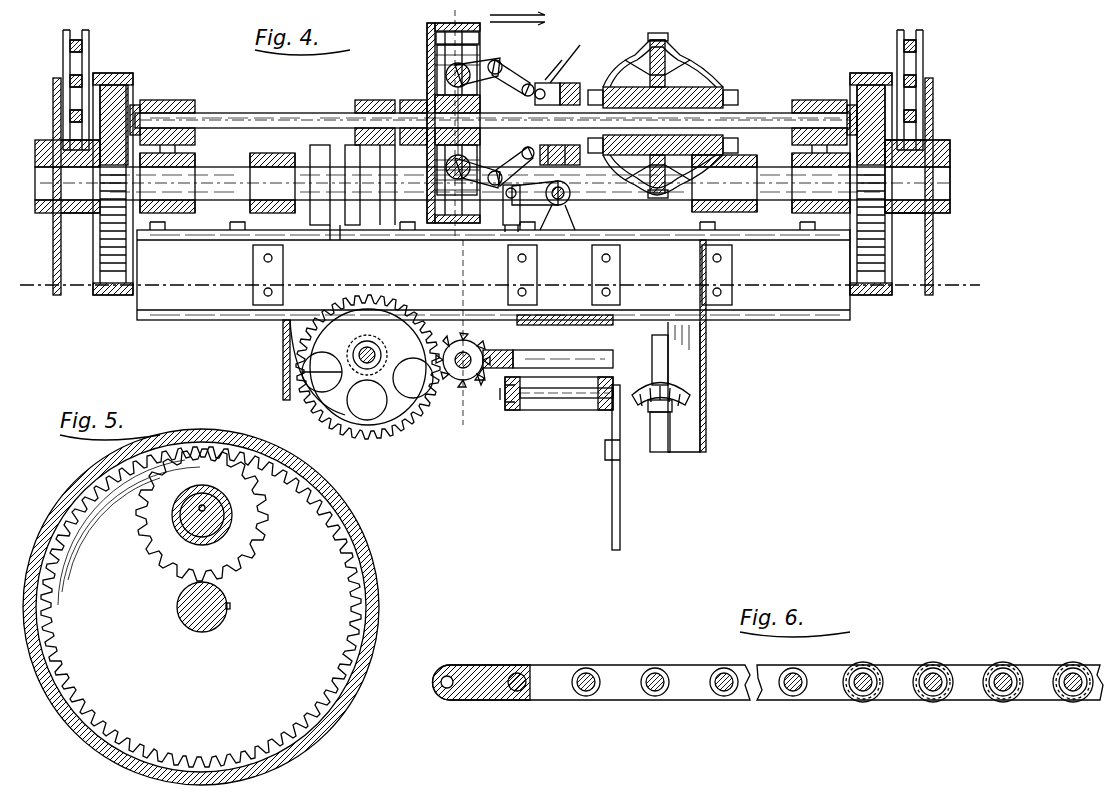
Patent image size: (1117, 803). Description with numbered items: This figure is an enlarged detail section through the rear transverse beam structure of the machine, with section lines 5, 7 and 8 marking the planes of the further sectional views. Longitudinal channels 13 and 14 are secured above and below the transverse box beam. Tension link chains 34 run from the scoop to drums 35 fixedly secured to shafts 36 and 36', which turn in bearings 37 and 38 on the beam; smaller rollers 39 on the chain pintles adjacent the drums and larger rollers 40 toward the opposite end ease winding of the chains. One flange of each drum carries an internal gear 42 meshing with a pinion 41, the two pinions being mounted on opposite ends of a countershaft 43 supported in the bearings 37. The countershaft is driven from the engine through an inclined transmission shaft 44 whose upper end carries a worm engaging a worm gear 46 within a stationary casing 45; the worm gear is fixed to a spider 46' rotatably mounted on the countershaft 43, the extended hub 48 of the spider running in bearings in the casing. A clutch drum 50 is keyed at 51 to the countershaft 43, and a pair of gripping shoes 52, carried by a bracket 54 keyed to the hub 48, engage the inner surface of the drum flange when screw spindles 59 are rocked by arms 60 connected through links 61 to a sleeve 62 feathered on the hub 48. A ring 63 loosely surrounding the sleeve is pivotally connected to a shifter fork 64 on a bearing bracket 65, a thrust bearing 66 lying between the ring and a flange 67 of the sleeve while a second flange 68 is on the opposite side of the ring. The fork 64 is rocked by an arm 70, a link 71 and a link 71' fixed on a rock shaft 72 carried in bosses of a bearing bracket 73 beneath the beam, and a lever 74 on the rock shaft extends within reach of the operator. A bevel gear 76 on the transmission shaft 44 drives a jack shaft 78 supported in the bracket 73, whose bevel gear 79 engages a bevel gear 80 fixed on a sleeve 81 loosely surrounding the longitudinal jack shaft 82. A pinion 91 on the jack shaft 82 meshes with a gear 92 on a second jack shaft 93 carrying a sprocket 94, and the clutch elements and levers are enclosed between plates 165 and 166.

In FIG. 4, the section line 5 is at (150, 365).
In FIG. 4, the section line 7 is at (960, 300).
In FIG. 4, the section line 8 is at (517, 28).
In FIG. 4, the longitudinal channel 13 is at (705, 352).
In FIG. 4, the longitudinal channel 14 is at (270, 183).
In FIG. 4, the link chain 34 is at (62, 40).
In FIG. 6, the link chain 34 is at (1010, 665).
In FIG. 4, the drum 35 is at (60, 225).
In FIG. 4, the shaft 36 is at (475, 176).
In FIG. 5, the shaft 36 is at (206, 623).
In FIG. 4, the shaft 36' is at (945, 176).
In FIG. 4, the bearing 37 is at (195, 155).
In FIG. 4, the bearing 38 is at (320, 148).
In FIG. 4, the roller 39 is at (70, 65).
In FIG. 6, the roller 39 is at (648, 668).
In FIG. 6, the roller 40 is at (930, 665).
In FIG. 4, the pinion 41 is at (120, 100).
In FIG. 5, the pinion 41 is at (178, 565).
In FIG. 4, the internal gear 42 is at (95, 298).
In FIG. 5, the internal gear 42 is at (355, 588).
In FIG. 4, the countershaft 43 is at (240, 106).
In FIG. 5, the countershaft 43 is at (182, 530).
In FIG. 4, the transmission shaft 44 is at (652, 452).
In FIG. 4, the casing 45 is at (668, 62).
In FIG. 4, the worm gear 46 is at (662, 104).
In FIG. 4, the spider 46' is at (694, 109).
In FIG. 4, the extended hub 48 is at (612, 82).
In FIG. 4, the clutch drum 50 is at (425, 33).
In FIG. 4, the key 51 is at (400, 112).
In FIG. 4, the gripping shoe 52 is at (436, 44).
In FIG. 4, the bracket 54 is at (440, 155).
In FIG. 4, the screw spindle 59 is at (437, 72).
In FIG. 4, the arm 60 is at (480, 52).
In FIG. 4, the link 61 is at (510, 62).
In FIG. 4, the sleeve 62 is at (548, 83).
In FIG. 4, the ring 63 is at (575, 83).
In FIG. 4, the shifter fork 64 is at (560, 165).
In FIG. 4, the bearing bracket 65 is at (572, 200).
In FIG. 4, the thrust bearing 66 is at (569, 51).
In FIG. 4, the flange 67 is at (588, 83).
In FIG. 4, the flange 68 is at (548, 53).
In FIG. 4, the arm 70 is at (548, 208).
In FIG. 4, the link 71 is at (499, 231).
In FIG. 4, the link 71' is at (551, 382).
In FIG. 4, the rock shaft 72 is at (558, 410).
In FIG. 4, the bearing bracket 73 is at (528, 412).
In FIG. 4, the lever 74 is at (622, 530).
In FIG. 4, the bevel gear 76 is at (693, 385).
In FIG. 4, the jack shaft 78 is at (580, 400).
In FIG. 4, the bevel gear 79 is at (482, 385).
In FIG. 4, the bevel gear 80 is at (478, 375).
In FIG. 4, the sleeve 81 is at (458, 385).
In FIG. 4, the jack shaft 82 is at (450, 378).
In FIG. 4, the pinion 91 is at (413, 378).
In FIG. 4, the gear 92 is at (368, 430).
In FIG. 4, the jack shaft 93 is at (367, 363).
In FIG. 4, the sprocket 94 is at (325, 392).
In FIG. 4, the plate 165 is at (283, 335).
In FIG. 4, the plate 166 is at (708, 425).